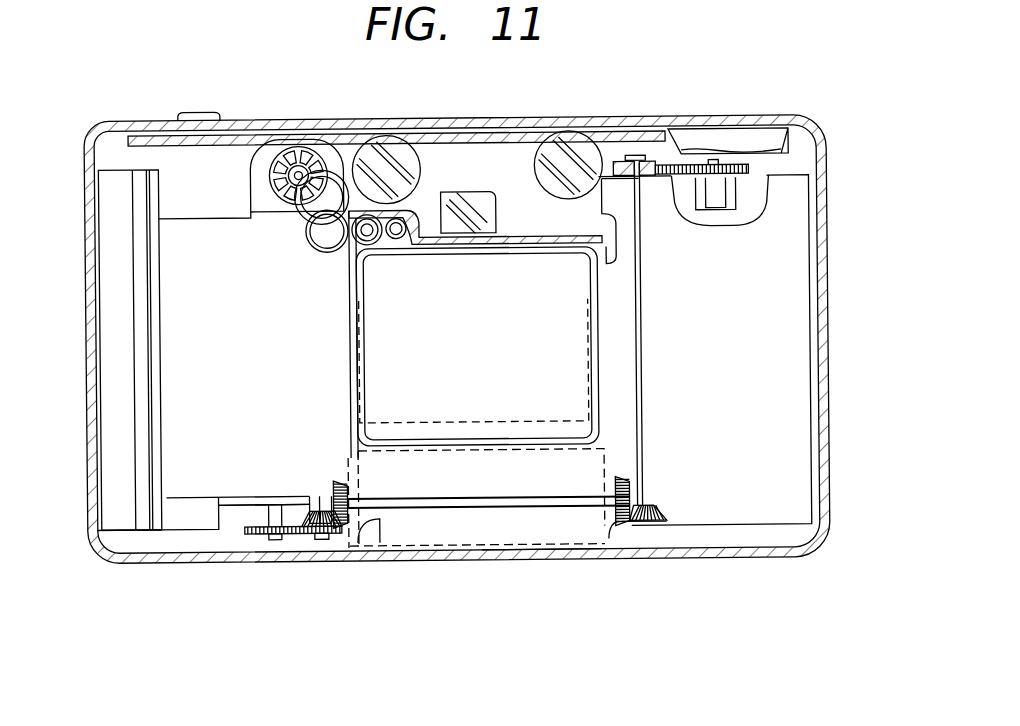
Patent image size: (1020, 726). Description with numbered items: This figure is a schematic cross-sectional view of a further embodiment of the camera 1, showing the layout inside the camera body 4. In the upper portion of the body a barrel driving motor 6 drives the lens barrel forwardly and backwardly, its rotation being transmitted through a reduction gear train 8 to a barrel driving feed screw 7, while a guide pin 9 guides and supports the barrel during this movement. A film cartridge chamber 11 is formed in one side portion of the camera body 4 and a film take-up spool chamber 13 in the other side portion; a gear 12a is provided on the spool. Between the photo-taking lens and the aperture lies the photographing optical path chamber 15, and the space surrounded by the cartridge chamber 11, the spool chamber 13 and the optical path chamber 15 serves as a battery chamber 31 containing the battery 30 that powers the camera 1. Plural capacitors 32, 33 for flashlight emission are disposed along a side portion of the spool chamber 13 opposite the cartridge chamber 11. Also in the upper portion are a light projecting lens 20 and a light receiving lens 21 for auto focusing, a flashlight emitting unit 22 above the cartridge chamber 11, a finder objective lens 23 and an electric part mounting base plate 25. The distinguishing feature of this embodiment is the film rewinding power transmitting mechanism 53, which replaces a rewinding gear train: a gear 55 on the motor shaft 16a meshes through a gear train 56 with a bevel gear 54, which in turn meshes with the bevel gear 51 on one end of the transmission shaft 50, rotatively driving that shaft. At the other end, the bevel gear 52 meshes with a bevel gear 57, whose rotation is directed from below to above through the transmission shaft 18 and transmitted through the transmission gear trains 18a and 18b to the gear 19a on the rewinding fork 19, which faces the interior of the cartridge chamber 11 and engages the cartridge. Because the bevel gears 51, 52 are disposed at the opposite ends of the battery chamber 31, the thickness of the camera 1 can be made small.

The camera 1 is at (456, 297).
The camera body 4 is at (100, 119).
The barrel driving motor 6 is at (318, 136).
The barrel driving feed screw 7 is at (369, 242).
The reduction gear train 8 is at (347, 268).
The guide pin 9 is at (399, 240).
The film cartridge chamber 11 is at (762, 505).
The gear 12a is at (237, 500).
The film take-up spool chamber 13 is at (183, 490).
The photographing optical path chamber 15 is at (483, 360).
The motor shaft 16a is at (271, 535).
The transmission shaft 18 is at (642, 252).
The transmission gear train 18a is at (622, 162).
The transmission gear train 18b is at (707, 165).
The rewinding fork 19 is at (731, 214).
The gear 19a is at (753, 138).
The light projecting lens 20 is at (389, 136).
The light receiving lens 21 is at (568, 133).
The flashlight emitting unit 22 is at (720, 131).
The finder objective lens 23 is at (468, 192).
The electric part mounting base plate 25 is at (650, 148).
The battery 30 is at (505, 548).
The battery chamber 31 is at (540, 552).
The capacitor 32 is at (126, 542).
The capacitor 33 is at (103, 206).
The transmission shaft 50 is at (450, 512).
The bevel gear 51 is at (367, 540).
The bevel gear 52 is at (608, 528).
The film rewinding power transmitting mechanism 53 is at (436, 589).
The bevel gear 54 is at (337, 540).
The gear 55 is at (253, 535).
The gear train 56 is at (293, 540).
The bevel gear 57 is at (645, 576).